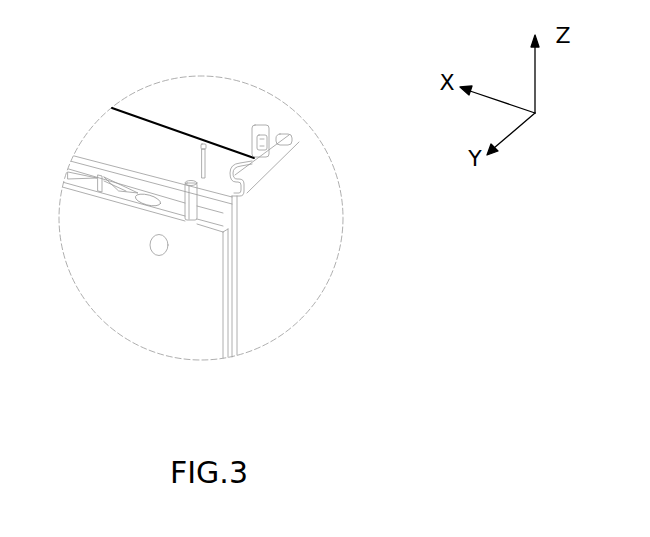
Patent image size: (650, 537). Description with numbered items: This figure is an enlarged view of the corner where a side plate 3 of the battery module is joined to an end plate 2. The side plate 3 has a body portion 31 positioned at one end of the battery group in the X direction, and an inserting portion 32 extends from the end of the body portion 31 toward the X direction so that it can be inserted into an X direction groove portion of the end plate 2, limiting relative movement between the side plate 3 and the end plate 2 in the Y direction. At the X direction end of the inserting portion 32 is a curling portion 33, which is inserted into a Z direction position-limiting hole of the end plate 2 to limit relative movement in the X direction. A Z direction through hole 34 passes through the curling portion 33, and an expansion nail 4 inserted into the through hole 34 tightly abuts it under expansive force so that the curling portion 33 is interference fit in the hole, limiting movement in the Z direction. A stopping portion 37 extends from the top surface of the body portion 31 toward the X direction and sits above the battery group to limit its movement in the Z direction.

The end plate 2 is at (100, 270).
The side plate 3 is at (125, 33).
The body portion 31 is at (290, 183).
The inserting portion 32 is at (213, 208).
The curling portion 33 is at (186, 183).
The Z direction through hole 34 is at (194, 181).
The stopping portion 37 is at (252, 164).
The expansion nail 4 is at (218, 310).